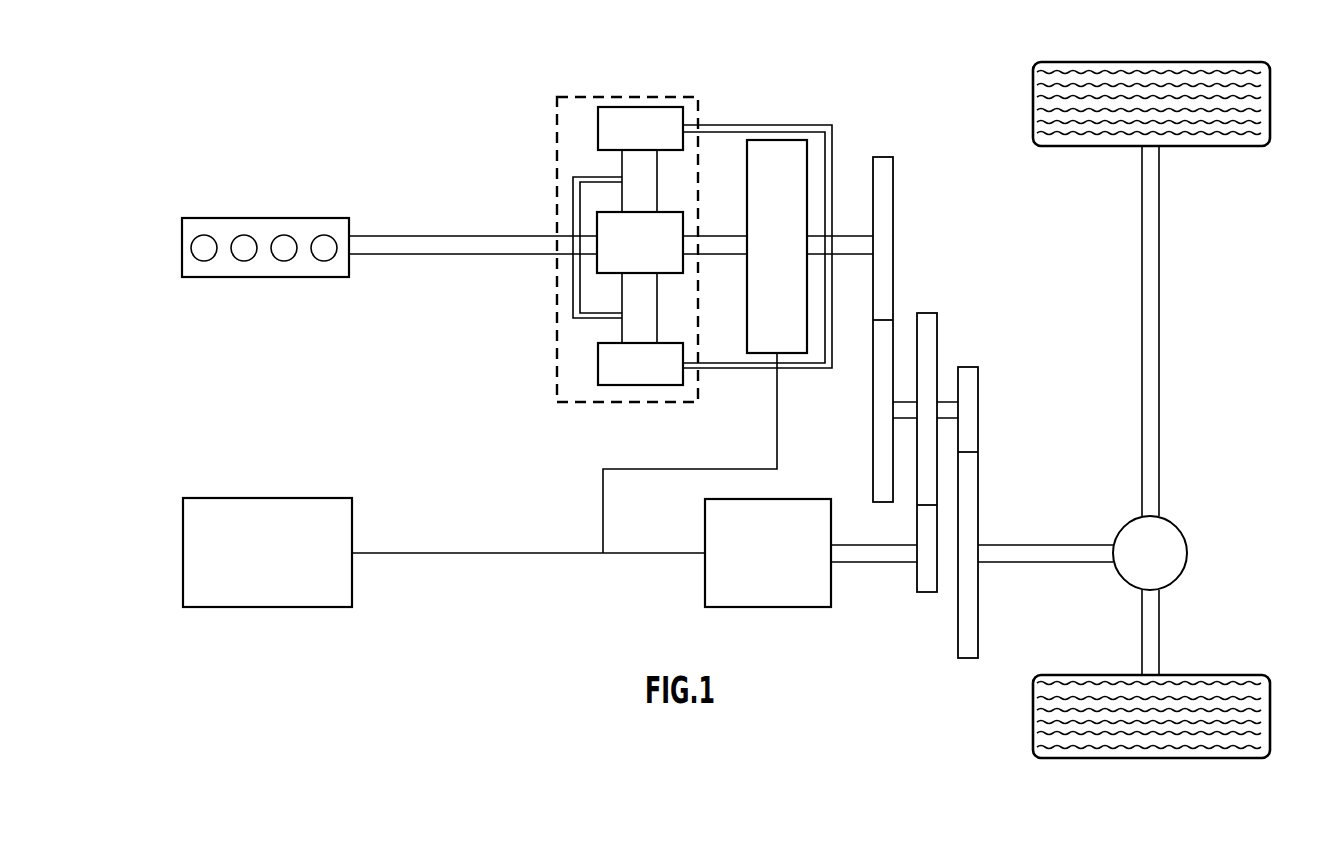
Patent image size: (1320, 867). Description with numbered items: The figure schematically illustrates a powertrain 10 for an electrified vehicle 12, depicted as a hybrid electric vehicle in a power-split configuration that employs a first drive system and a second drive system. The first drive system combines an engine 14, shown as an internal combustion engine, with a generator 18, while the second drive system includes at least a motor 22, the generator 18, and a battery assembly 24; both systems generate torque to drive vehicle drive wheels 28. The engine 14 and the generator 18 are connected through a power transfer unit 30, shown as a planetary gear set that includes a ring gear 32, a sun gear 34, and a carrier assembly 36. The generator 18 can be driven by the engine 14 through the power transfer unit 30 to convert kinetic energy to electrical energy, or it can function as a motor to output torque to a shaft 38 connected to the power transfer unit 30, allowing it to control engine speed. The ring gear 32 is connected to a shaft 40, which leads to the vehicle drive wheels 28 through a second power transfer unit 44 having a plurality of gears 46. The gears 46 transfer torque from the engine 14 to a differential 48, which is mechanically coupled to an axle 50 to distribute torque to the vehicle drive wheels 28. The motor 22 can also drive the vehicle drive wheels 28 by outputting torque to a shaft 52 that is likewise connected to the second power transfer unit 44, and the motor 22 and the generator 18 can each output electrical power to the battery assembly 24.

The powertrain 10 is at (404, 121).
The electrified vehicle 12 is at (803, 54).
The engine 14 is at (195, 218).
The generator 18 is at (753, 140).
The motor 22 is at (831, 592).
The battery assembly 24 is at (203, 498).
The vehicle drive wheels 28 is at (1270, 718).
The power transfer unit 30 is at (552, 361).
The ring gear 32 is at (598, 127).
The sun gear 34 is at (597, 218).
The carrier assembly 36 is at (573, 303).
The shaft 38 is at (715, 236).
The shaft 40 is at (852, 235).
The second power transfer unit 44 is at (967, 277).
The gears 46 is at (893, 283).
The differential 48 is at (1182, 572).
The axle 50 is at (1160, 320).
The shaft 52 is at (885, 565).